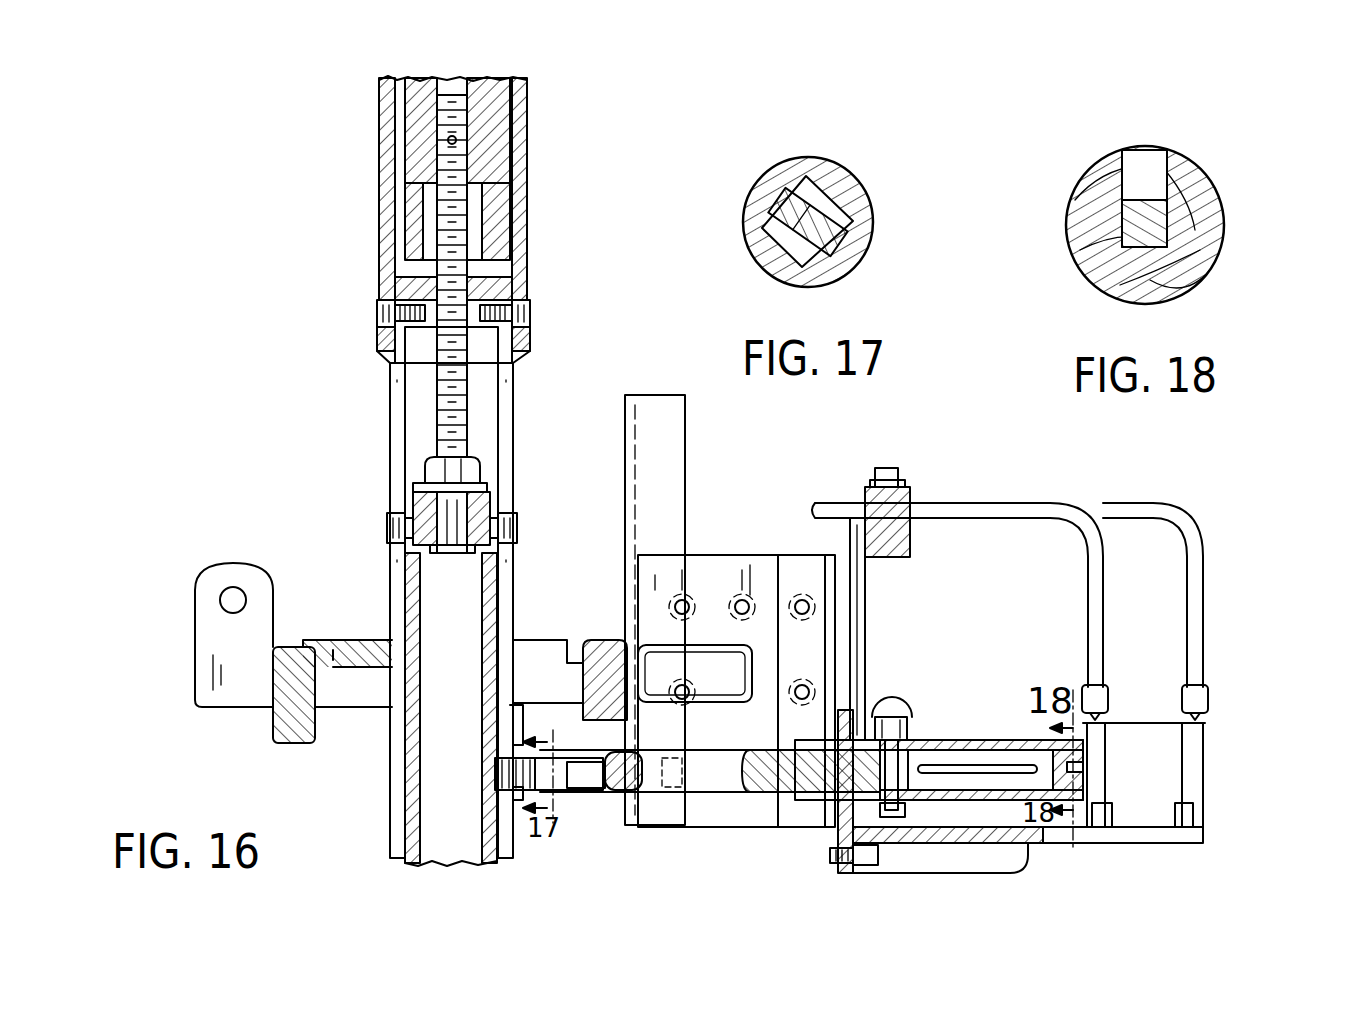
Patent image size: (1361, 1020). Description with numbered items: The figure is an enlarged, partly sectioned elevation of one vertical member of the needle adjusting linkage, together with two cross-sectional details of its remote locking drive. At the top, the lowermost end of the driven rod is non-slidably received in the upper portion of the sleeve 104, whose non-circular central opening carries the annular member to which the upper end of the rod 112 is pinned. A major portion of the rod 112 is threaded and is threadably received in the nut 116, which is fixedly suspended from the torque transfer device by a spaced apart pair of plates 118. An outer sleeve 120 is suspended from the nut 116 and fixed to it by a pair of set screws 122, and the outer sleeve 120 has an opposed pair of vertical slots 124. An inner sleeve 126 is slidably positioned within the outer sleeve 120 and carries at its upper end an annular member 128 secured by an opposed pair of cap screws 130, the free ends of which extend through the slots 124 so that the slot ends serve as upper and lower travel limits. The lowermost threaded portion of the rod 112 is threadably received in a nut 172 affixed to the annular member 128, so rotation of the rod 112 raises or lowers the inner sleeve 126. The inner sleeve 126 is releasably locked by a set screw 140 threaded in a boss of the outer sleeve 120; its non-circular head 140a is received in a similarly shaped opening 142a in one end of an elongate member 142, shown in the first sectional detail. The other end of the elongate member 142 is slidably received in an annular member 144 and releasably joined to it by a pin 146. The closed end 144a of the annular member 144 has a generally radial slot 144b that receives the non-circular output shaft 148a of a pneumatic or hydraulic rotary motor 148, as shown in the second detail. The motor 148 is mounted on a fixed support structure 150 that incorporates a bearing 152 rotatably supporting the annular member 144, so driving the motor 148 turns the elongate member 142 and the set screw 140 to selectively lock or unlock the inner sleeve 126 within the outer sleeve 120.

In FIG. 16, the sleeve 104 is at (496, 140).
In FIG. 16, the rod 112 is at (470, 216).
In FIG. 16, the nut 116 is at (497, 283).
In FIG. 16, the plates 118 is at (383, 208).
In FIG. 16, the outer sleeve 120 is at (391, 367).
In FIG. 16, the set screws 122 is at (378, 315).
In FIG. 16, the vertical slots 124 is at (396, 408).
In FIG. 16, the inner sleeve 126 is at (420, 843).
In FIG. 16, the annular member 128 is at (491, 500).
In FIG. 16, the cap screws 130 is at (518, 531).
In FIG. 16, the set screw 140 is at (500, 779).
In FIG. 16, the head 140a is at (588, 778).
In FIG. 17, the head 140a is at (853, 203).
In FIG. 16, the elongate member 142 is at (733, 793).
In FIG. 17, the elongate member 142 is at (862, 183).
In FIG. 17, the opening 142a is at (868, 245).
In FIG. 16, the annular member 144 is at (944, 740).
In FIG. 16, the closed end 144a is at (1090, 795).
In FIG. 18, the closed end 144a is at (1226, 208).
In FIG. 18, the radial slot 144b is at (1160, 157).
In FIG. 16, the pin 146 is at (890, 717).
In FIG. 16, the rotary motor 148 is at (1207, 762).
In FIG. 16, the output shaft 148a is at (1083, 768).
In FIG. 18, the output shaft 148a is at (1160, 230).
In FIG. 16, the fixed support structure 150 is at (1190, 838).
In FIG. 16, the bearing 152 is at (880, 812).
In FIG. 16, the nut 172 is at (481, 470).